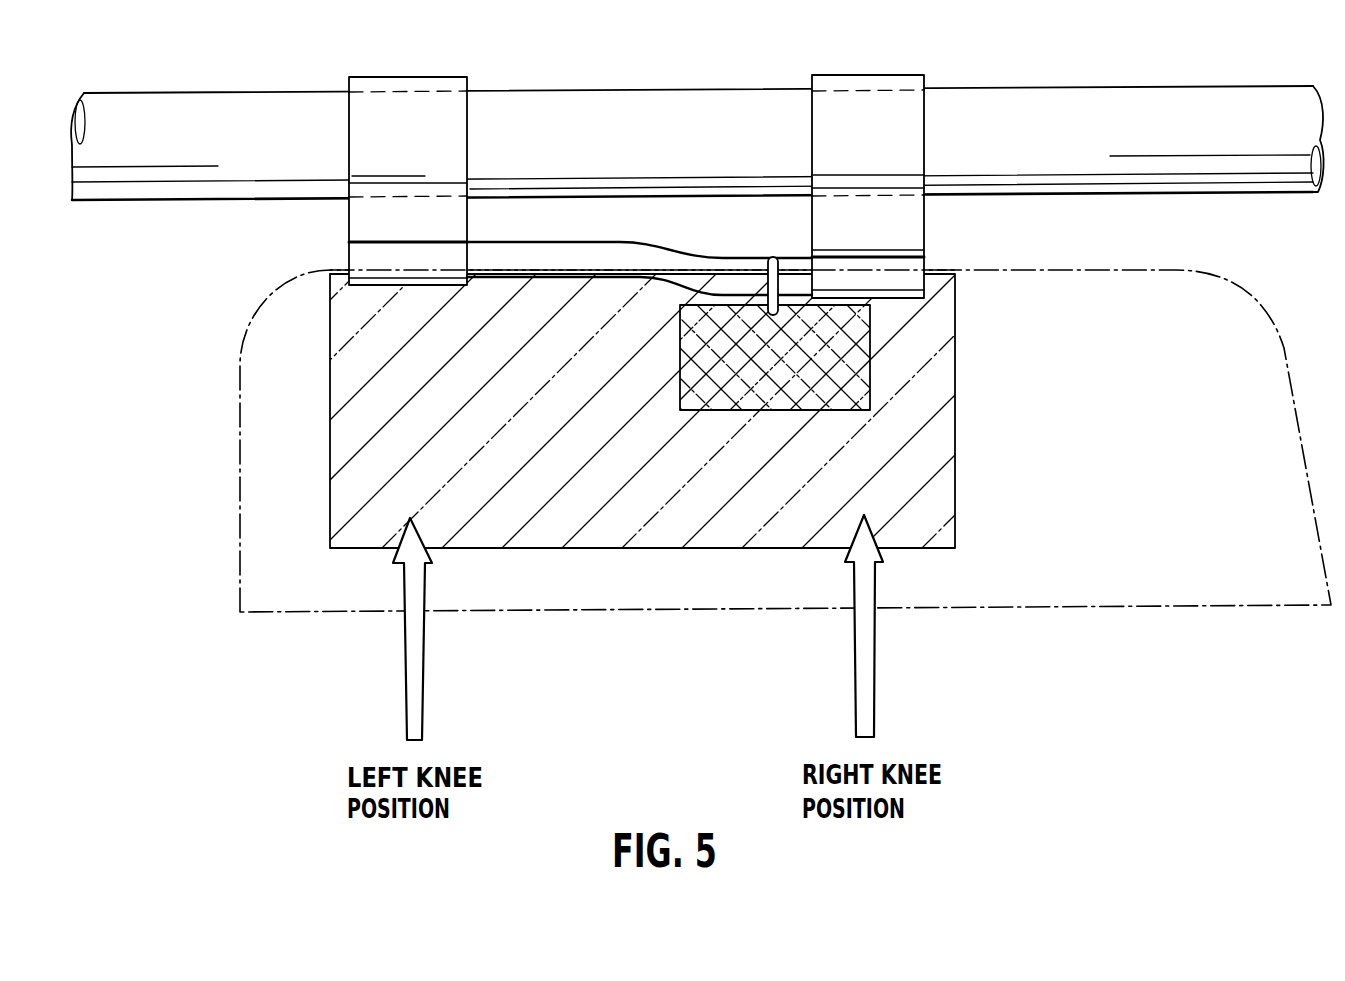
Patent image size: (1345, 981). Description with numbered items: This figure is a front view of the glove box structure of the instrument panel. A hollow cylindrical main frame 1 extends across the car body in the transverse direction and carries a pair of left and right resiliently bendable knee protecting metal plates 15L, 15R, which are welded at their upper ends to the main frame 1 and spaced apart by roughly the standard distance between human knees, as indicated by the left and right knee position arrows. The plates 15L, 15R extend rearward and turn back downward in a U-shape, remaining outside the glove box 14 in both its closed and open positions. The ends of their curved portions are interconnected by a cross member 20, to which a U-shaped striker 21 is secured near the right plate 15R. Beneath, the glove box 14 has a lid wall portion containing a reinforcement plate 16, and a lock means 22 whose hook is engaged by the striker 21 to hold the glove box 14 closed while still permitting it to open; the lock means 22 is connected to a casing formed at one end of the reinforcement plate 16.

The main frame 1 is at (1093, 92).
The glove box 14 is at (1128, 610).
The left knee protecting metal plate 15L is at (423, 77).
The right knee protecting metal plate 15R is at (880, 75).
The reinforcement plate 16 is at (955, 431).
The cross member 20 is at (670, 253).
The striker 21 is at (768, 259).
The lock means 22 is at (795, 377).